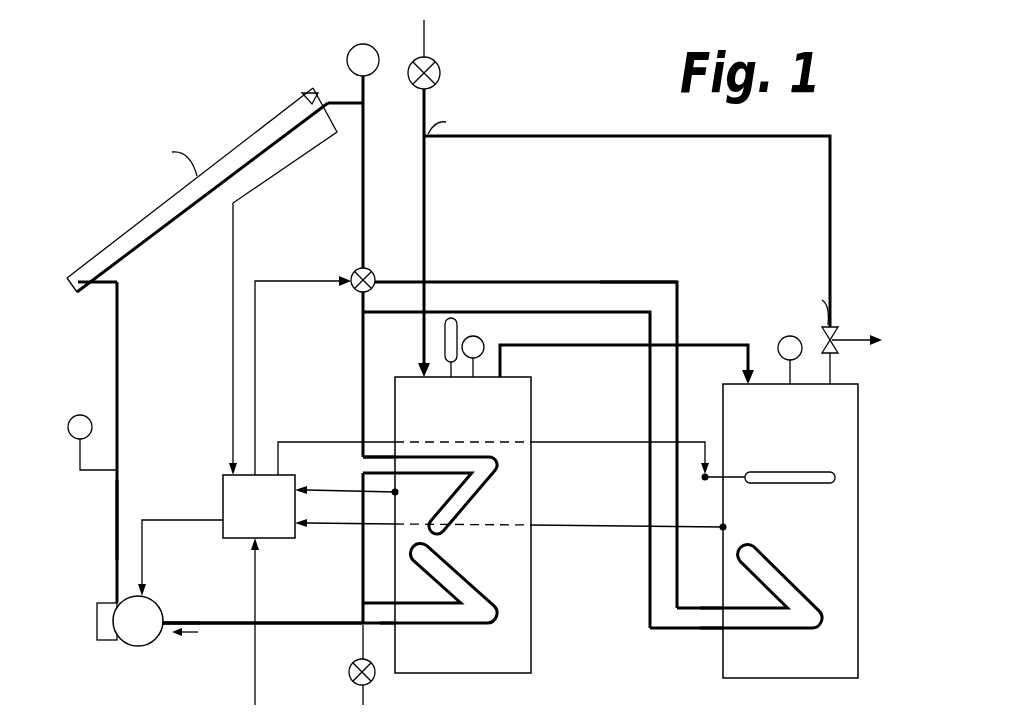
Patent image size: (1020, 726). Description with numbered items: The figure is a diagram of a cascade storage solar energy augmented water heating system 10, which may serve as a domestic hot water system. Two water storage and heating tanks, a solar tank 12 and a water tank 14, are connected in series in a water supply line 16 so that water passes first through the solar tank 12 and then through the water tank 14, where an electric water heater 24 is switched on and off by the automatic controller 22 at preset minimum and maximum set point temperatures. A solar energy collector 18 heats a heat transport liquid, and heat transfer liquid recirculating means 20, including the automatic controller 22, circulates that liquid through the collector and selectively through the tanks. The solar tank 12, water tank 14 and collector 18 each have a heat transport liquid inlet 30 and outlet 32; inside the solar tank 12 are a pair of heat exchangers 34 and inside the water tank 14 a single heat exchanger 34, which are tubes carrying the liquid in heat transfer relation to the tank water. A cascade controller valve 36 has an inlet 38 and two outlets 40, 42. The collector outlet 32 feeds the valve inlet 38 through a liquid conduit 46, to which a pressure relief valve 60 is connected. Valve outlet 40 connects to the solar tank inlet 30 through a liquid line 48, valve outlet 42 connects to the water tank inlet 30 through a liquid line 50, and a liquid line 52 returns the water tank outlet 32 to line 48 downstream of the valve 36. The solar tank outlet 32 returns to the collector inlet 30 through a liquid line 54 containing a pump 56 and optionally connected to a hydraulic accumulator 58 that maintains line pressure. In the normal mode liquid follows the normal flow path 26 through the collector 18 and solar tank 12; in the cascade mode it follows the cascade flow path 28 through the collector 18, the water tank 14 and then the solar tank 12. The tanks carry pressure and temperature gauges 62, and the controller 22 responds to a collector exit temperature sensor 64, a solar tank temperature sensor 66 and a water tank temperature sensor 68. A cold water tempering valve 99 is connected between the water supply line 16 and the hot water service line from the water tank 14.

The water heating system 10 is at (236, 90).
The solar tank 12 is at (543, 488).
The water tank 14 is at (870, 440).
The water supply line 16 is at (427, 209).
The solar energy collector 18 is at (226, 143).
The heat transfer liquid recirculating means 20 is at (107, 656).
The automatic controller 22 is at (213, 490).
The water heater 24 is at (770, 470).
The normal flow path 26 is at (127, 386).
The cascade flow path 28 is at (650, 252).
The heat transport liquid inlet 30 is at (82, 290).
The heat transport liquid outlet 32 is at (318, 72).
The heat exchanger 34 is at (487, 420).
The cascade controller valve 36 is at (381, 261).
The valve inlet 38 is at (356, 266).
The valve outlet 40 is at (360, 293).
The valve outlet 42 is at (372, 288).
The liquid conduit 46 is at (362, 170).
The liquid line 48 is at (358, 380).
The liquid line 50 is at (543, 280).
The liquid line 52 is at (543, 314).
The liquid line 54 is at (114, 515).
The pump 56 is at (157, 644).
The hydraulic accumulator 58 is at (78, 415).
The pressure relief valve 60 is at (383, 18).
The pressure and temperature gauge 62 is at (478, 336).
The temperature sensor 64 is at (302, 98).
The temperature sensor 66 is at (398, 491).
The temperature sensor 68 is at (721, 524).
The cold water tempering valve 99 is at (835, 347).